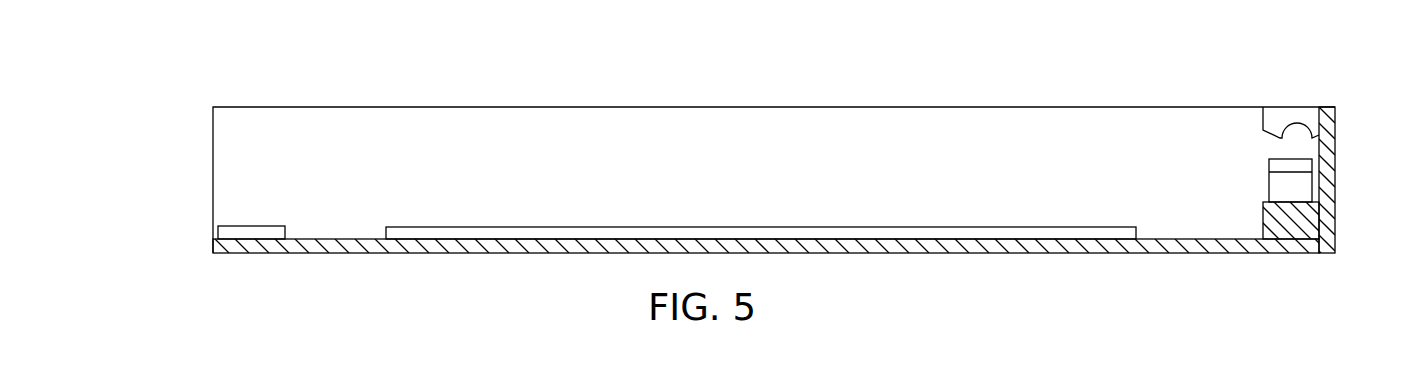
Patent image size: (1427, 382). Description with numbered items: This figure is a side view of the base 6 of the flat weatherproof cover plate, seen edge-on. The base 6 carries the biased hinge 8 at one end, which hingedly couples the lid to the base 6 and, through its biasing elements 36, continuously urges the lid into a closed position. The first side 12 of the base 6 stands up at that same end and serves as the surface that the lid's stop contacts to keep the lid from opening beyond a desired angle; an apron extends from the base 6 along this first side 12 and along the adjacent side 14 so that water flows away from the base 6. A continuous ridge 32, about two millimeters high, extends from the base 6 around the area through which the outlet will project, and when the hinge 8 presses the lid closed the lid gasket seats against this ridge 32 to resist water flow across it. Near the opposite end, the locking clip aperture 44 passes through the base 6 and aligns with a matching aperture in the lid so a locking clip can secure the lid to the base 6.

The side 14 is at (756, 127).
The biased hinge 8 is at (1287, 113).
The first side 12 is at (1325, 175).
The biasing elements 36 is at (1282, 184).
The continuous ridge 32 is at (807, 233).
The locking clip aperture 44 is at (248, 233).
The base 6 is at (1107, 246).